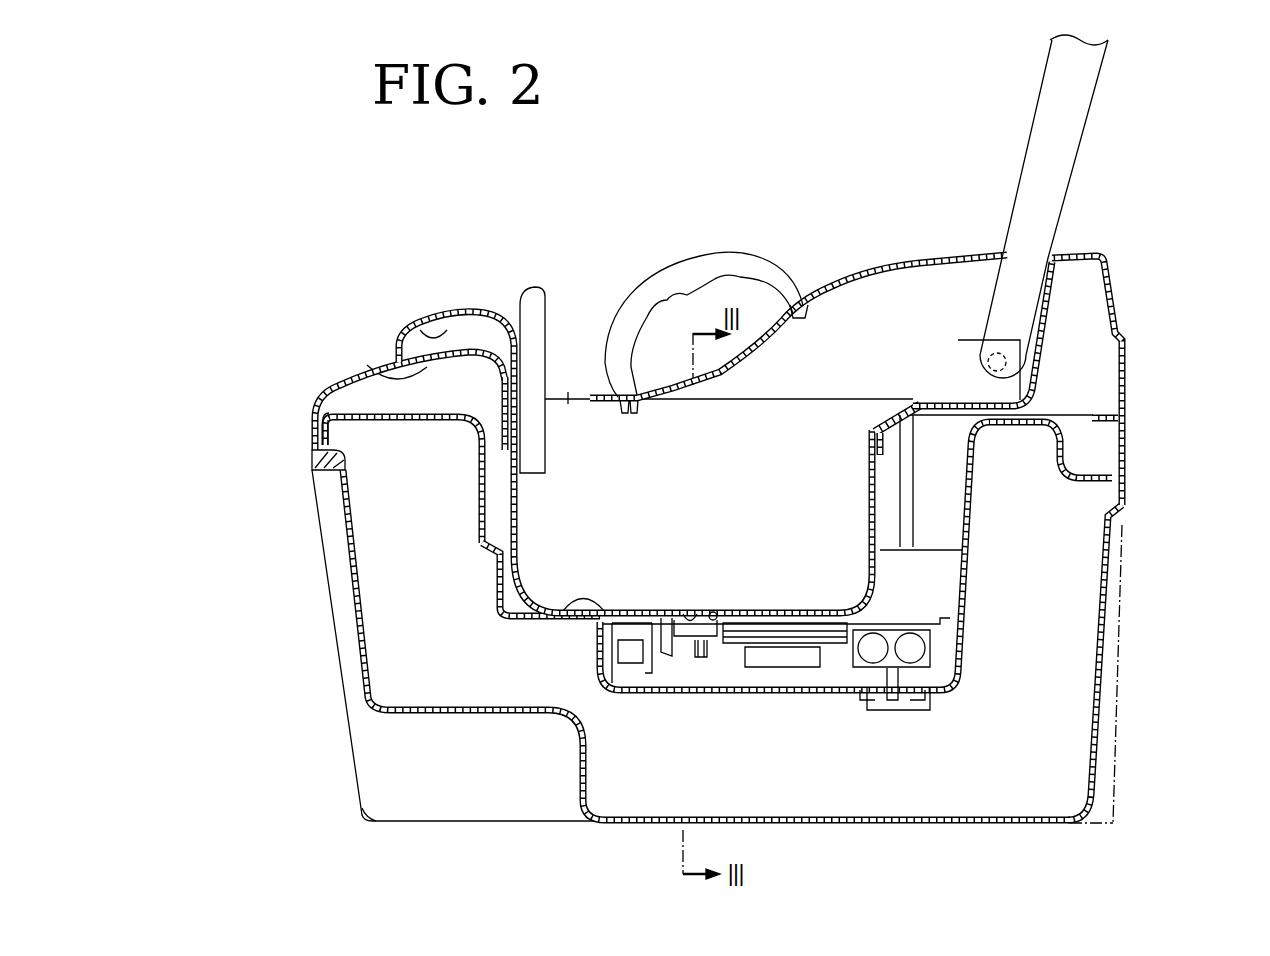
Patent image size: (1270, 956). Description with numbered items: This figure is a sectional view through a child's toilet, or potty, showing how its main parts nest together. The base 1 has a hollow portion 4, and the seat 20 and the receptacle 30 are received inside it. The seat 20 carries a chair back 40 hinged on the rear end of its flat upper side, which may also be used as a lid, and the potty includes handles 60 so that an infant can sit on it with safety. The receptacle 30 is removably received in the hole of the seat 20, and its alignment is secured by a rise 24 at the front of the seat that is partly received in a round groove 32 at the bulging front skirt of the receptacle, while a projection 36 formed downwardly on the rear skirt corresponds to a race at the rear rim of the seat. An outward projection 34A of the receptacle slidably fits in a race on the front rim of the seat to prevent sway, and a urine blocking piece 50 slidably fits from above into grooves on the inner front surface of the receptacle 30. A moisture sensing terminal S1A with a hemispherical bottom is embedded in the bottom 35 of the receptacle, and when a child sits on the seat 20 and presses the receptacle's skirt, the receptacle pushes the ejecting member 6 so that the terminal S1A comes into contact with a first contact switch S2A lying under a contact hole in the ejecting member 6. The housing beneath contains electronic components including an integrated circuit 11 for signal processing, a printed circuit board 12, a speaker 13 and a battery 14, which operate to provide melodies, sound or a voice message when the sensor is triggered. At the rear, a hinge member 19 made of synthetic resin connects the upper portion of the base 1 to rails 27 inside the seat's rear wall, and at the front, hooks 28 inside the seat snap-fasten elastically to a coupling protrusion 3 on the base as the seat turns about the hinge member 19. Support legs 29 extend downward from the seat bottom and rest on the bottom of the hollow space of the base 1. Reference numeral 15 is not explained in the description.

The base 1 is at (1093, 695).
The coupling protrusion 3 is at (232, 428).
The hollow portion 4 is at (282, 705).
The ejecting member 6 is at (610, 530).
The integrated circuit 11 is at (533, 760).
The printed circuit board 12 is at (627, 760).
The speaker 13 is at (780, 668).
The battery 14 is at (912, 655).
The base wall 15 is at (1015, 622).
The hinge member 19 is at (1128, 402).
The seat 20 is at (932, 270).
The rise 24 is at (283, 362).
The rails 27 is at (1128, 455).
The hooks 28 is at (248, 487).
The support legs 29 is at (908, 497).
The receptacle 30 is at (848, 363).
The round groove 32 is at (342, 303).
The outward projection 34A is at (445, 513).
The bottom 35 is at (510, 665).
The projection 36 is at (890, 350).
The chair back 40 is at (1062, 170).
The urine blocking piece 50 is at (523, 300).
The handles 60 is at (695, 270).
The moisture sensing terminal S1A is at (688, 610).
The first contact switch S2A is at (715, 610).